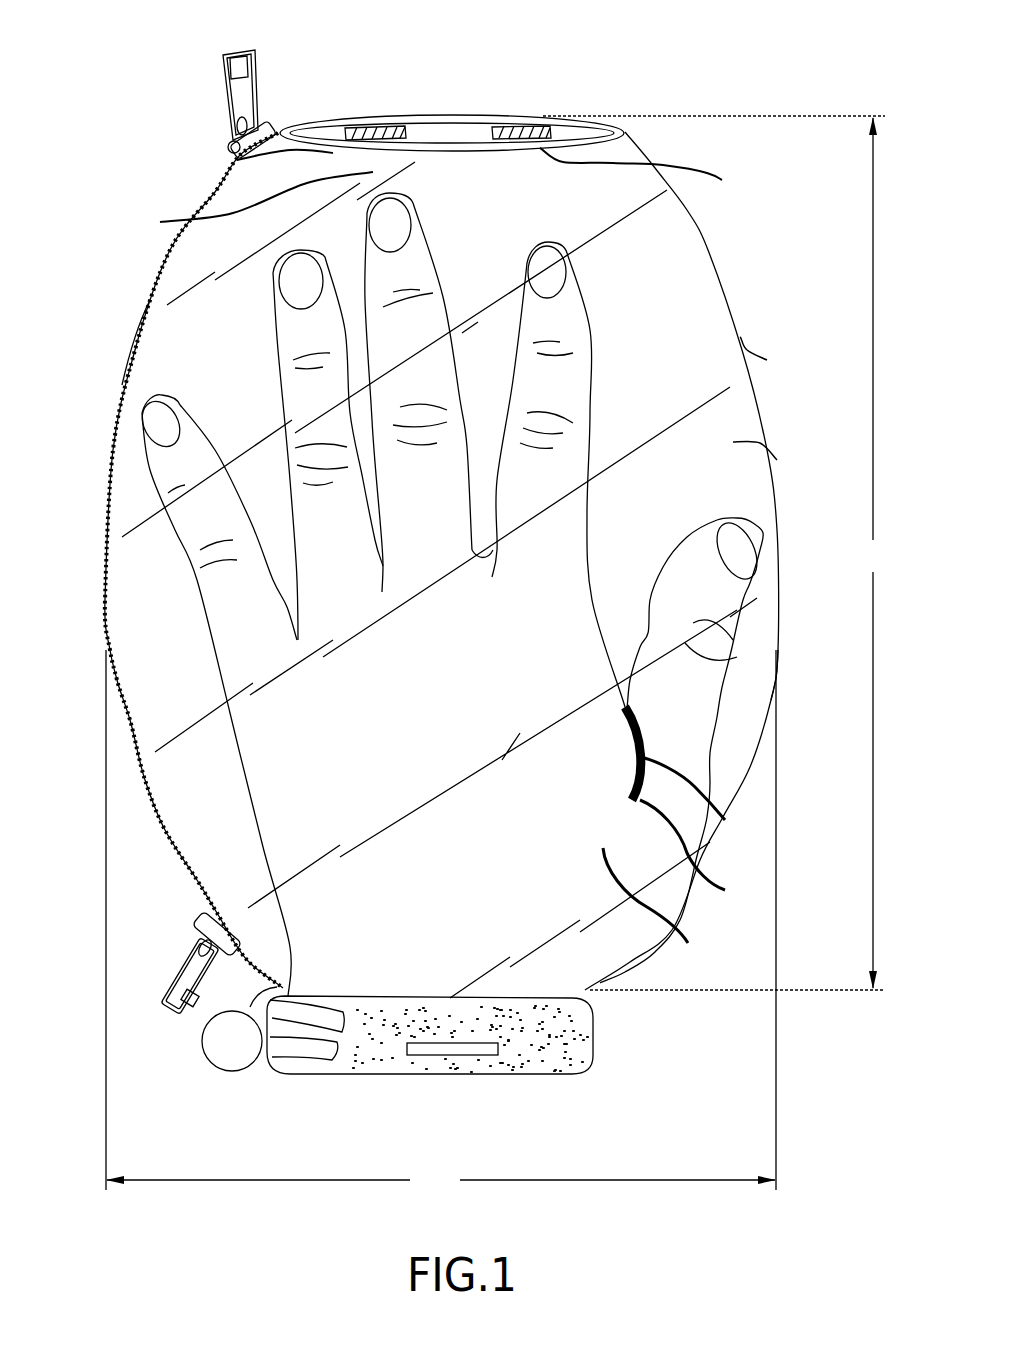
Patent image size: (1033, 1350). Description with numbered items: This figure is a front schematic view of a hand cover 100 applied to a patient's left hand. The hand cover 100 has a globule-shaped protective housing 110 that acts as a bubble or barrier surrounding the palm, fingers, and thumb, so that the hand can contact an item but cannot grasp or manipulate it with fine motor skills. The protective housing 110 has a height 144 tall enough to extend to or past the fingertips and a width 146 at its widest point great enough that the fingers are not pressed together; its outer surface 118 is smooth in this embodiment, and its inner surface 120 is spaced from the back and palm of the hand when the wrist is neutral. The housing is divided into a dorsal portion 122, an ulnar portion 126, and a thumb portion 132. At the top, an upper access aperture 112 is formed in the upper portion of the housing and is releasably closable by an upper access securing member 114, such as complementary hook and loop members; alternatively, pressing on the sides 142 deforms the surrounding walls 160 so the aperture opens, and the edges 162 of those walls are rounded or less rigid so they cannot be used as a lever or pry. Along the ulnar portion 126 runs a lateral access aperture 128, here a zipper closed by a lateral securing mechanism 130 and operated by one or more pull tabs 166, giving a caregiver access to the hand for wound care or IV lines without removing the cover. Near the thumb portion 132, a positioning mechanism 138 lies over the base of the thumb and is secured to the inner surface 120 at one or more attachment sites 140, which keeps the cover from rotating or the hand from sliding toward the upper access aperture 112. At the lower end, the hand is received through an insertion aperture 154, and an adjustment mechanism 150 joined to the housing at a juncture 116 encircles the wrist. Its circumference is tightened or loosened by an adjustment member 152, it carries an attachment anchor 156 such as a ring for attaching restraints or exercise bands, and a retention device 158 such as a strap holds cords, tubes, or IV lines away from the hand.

The hand cover 100 is at (764, 66).
The protective housing 110 is at (187, 353).
The upper access aperture 112 is at (563, 132).
The upper access securing member 114 is at (528, 116).
The juncture 116 is at (593, 1013).
The outer surface 118 is at (777, 460).
The inner surface 120 is at (733, 343).
The dorsal portion 122 is at (656, 909).
The ulnar portion 126 is at (162, 778).
The lateral access aperture 128 is at (115, 672).
The lateral securing mechanism 130 is at (108, 590).
The thumb portion 132 is at (778, 660).
The positioning mechanism 138 is at (725, 820).
The positioning mechanism attachment site 140 is at (701, 852).
The sides of the upper access aperture 142 is at (232, 172).
The height 144 is at (716, 553).
The width 146 is at (441, 922).
The adjustment mechanism 150 is at (572, 1040).
The adjustment member 152 is at (260, 995).
The insertion aperture 154 is at (443, 1076).
The attachment anchor 156 is at (203, 1050).
The retention device 158 is at (483, 1057).
The walls 160 is at (245, 203).
The edges 162 is at (649, 174).
The pull tab 166 is at (232, 92).